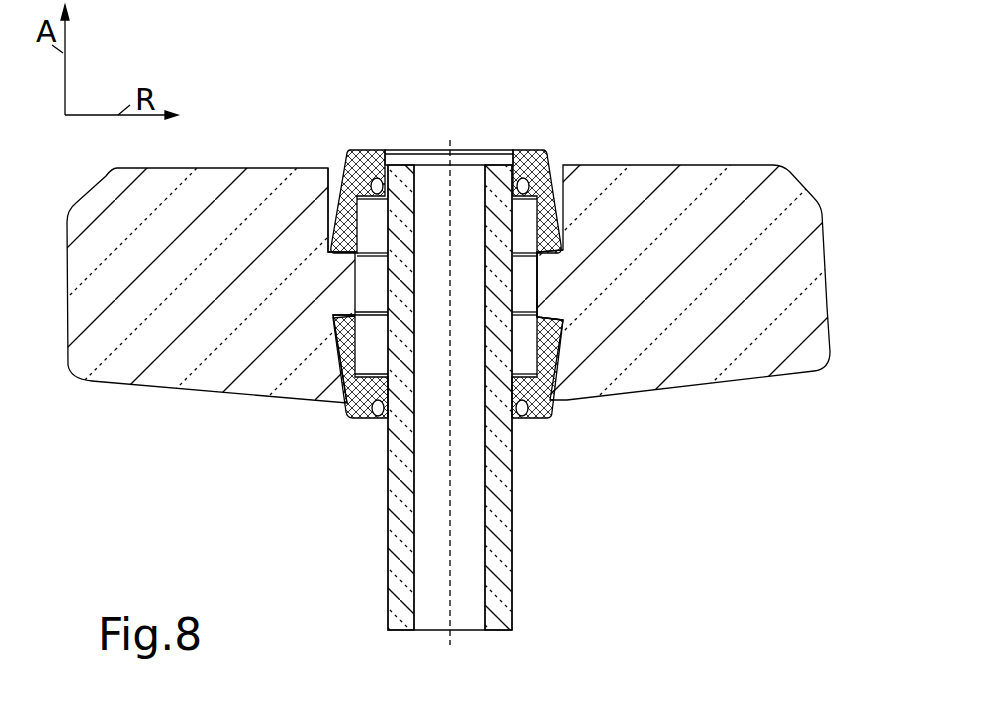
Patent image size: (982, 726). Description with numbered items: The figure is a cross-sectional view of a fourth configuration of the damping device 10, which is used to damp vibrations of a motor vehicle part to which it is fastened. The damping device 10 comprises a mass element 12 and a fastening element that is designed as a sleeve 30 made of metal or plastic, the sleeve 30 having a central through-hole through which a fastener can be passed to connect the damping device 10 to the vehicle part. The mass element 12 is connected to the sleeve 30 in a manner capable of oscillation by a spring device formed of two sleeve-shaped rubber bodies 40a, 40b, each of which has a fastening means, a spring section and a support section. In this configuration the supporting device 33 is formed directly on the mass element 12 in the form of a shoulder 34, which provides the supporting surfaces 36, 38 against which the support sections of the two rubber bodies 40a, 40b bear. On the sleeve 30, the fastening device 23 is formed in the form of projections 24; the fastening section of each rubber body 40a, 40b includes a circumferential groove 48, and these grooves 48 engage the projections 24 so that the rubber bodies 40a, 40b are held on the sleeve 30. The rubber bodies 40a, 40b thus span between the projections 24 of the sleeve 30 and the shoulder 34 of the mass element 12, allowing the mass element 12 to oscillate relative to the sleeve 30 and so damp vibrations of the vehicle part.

The damping device 10 is at (617, 142).
The mass element 12 is at (728, 180).
The fastening device 23 is at (392, 152).
The projections 24 is at (370, 176).
The sleeve 30 is at (408, 215).
The supporting device 33 is at (553, 260).
The shoulder 34 is at (550, 290).
The supporting surface 36 is at (325, 267).
The supporting surface 38 is at (333, 310).
The rubber body 40a is at (548, 190).
The rubber body 40b is at (567, 380).
The circumferential groove 48 is at (538, 152).